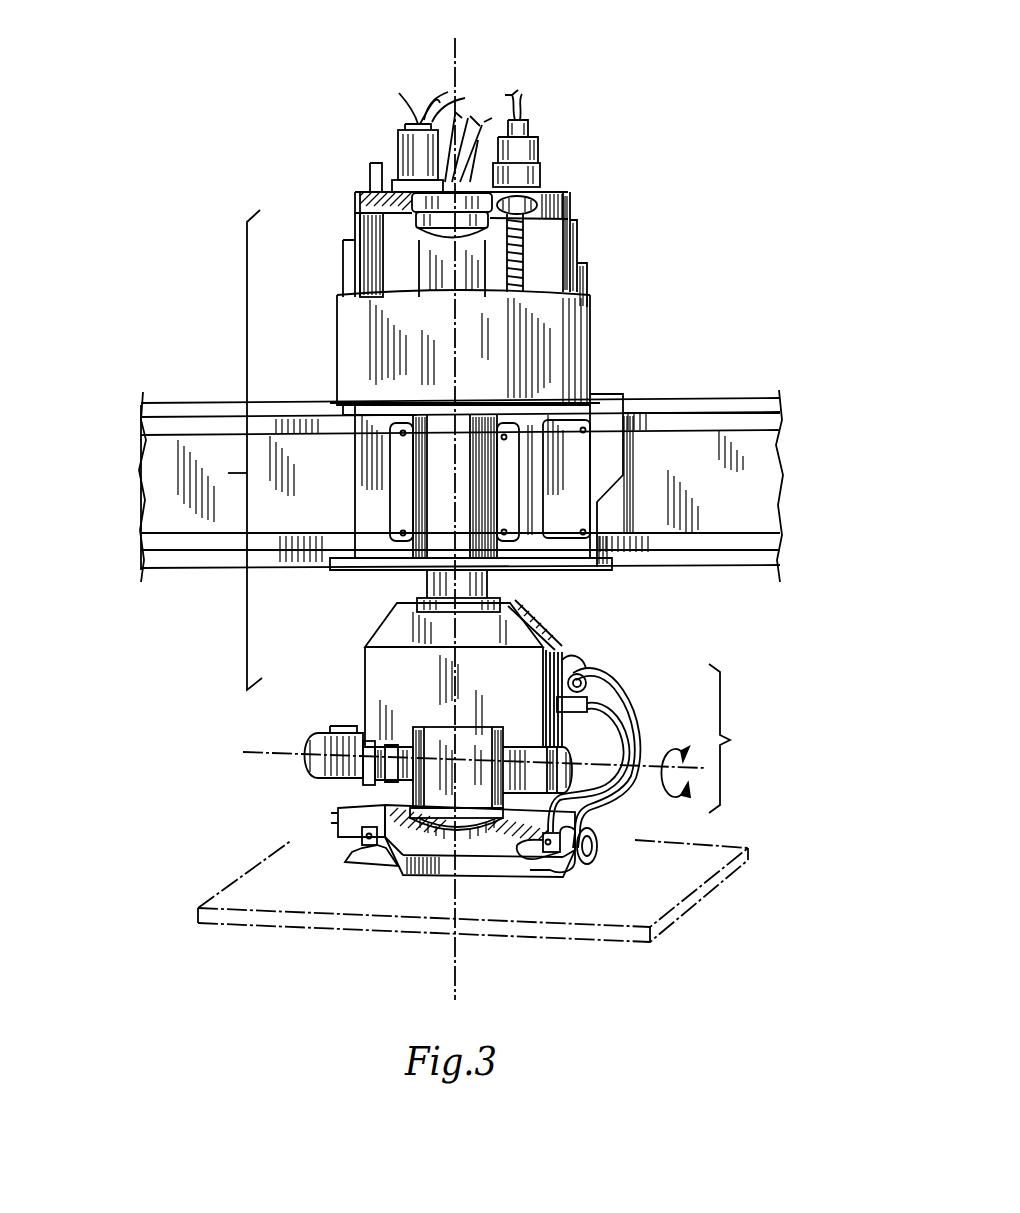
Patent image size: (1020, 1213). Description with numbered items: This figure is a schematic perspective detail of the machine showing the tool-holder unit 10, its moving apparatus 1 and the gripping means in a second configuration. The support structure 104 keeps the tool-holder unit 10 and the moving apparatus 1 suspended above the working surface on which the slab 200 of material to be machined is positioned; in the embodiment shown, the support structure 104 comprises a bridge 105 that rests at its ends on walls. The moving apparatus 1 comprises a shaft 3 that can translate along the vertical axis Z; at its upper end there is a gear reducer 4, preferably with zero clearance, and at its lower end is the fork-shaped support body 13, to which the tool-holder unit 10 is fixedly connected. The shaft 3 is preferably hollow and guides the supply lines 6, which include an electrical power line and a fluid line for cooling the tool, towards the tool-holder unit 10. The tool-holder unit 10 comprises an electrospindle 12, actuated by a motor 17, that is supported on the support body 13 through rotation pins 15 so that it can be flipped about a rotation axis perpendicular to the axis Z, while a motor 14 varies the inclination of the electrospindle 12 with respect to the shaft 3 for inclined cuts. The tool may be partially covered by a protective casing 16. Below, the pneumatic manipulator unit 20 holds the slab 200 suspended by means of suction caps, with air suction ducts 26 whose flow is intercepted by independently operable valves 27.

The vertical axis Z is at (456, 45).
The moving apparatus 1 is at (247, 492).
The shaft 3 is at (440, 262).
The gear reducer 4 is at (360, 208).
The supply lines 6 is at (398, 112).
The tool-holder unit 10 is at (730, 740).
The electrospindle 12 is at (402, 873).
The support body 13 is at (390, 672).
The motor 14 is at (315, 735).
The rotation pins 15 is at (597, 708).
The protective casing 16 is at (422, 870).
The motor 17 is at (470, 790).
The manipulator unit 20 is at (530, 885).
The air suction ducts 26 is at (596, 804).
The valves 27 is at (580, 862).
The support structure 104 is at (682, 398).
The bridge 105 is at (153, 471).
The slab 200 is at (252, 887).